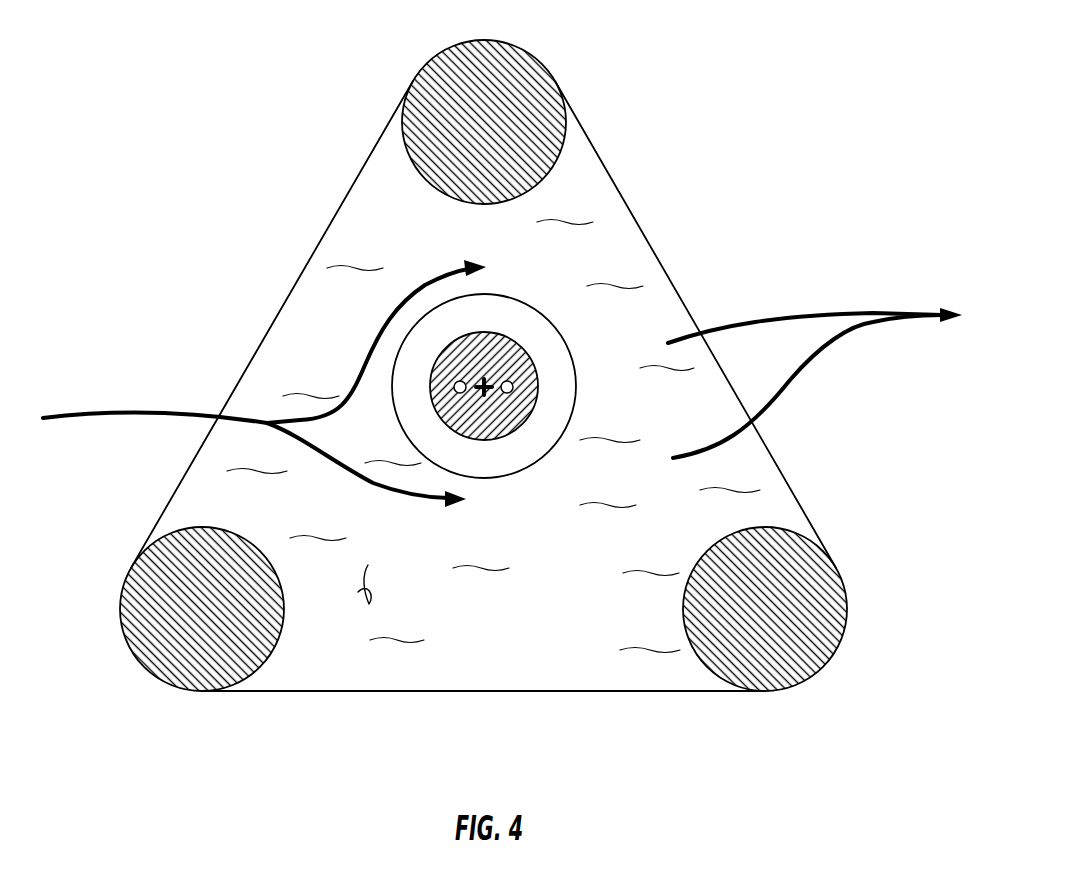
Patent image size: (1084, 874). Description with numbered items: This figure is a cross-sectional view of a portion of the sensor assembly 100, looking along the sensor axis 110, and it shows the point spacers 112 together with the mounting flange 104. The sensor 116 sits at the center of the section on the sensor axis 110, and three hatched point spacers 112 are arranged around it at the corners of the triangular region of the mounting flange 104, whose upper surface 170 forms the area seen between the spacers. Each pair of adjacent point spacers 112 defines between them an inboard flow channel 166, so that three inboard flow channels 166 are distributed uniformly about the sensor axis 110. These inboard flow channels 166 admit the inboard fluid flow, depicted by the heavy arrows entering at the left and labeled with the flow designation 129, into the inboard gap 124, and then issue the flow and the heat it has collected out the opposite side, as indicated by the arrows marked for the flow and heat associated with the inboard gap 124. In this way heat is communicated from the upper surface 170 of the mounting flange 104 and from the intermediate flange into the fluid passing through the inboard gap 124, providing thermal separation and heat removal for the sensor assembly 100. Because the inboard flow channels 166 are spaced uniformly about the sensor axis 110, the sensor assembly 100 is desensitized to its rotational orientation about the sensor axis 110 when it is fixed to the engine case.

The sensor assembly 100 is at (502, 403).
The mounting flange 104 is at (647, 303).
The sensor axis 110 is at (490, 392).
The point spacers 112 is at (527, 80).
The sensor 116 is at (495, 378).
The inboard gap 124 is at (605, 556).
The inlet fluid flow 129 is at (107, 410).
The inboard flow channels 166 is at (345, 337).
The upper surface 170 is at (358, 592).